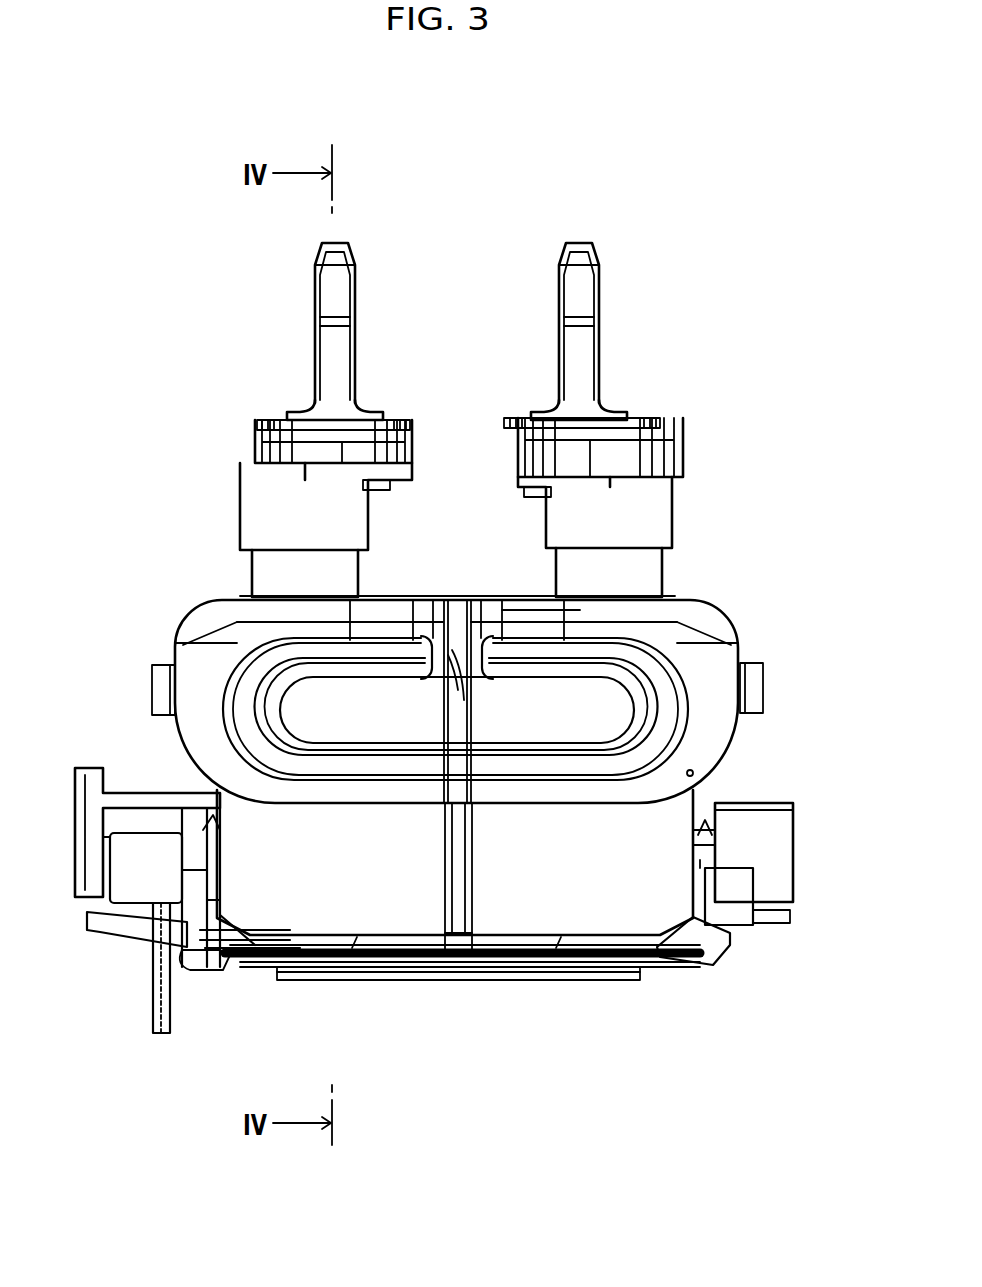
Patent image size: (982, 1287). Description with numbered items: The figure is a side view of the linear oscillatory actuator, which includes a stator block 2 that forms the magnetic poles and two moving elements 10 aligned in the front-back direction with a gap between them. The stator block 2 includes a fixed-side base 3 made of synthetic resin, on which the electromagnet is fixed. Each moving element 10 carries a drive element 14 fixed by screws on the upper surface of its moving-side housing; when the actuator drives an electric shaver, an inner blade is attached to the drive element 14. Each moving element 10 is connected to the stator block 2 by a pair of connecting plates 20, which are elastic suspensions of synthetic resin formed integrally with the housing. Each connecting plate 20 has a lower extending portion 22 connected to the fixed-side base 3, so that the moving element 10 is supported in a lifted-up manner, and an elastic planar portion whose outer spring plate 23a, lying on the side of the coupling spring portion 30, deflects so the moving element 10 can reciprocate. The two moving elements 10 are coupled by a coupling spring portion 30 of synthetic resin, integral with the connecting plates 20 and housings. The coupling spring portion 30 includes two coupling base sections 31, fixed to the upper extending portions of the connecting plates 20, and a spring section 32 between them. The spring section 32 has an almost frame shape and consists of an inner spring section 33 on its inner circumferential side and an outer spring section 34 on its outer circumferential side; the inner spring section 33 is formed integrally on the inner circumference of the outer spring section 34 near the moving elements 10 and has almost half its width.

The stator block 2 is at (458, 991).
The fixed-side base 3 is at (507, 962).
The moving element 10 is at (456, 420).
The drive element 14 is at (330, 350).
The connecting plate 20 is at (198, 856).
The lower extending portion 22 is at (348, 962).
The spring plate 23a is at (273, 900).
The coupling spring portion 30 is at (748, 637).
The coupling base section 31 is at (481, 615).
The spring section 32 is at (539, 714).
The inner spring section 33 is at (655, 705).
The outer spring section 34 is at (803, 705).